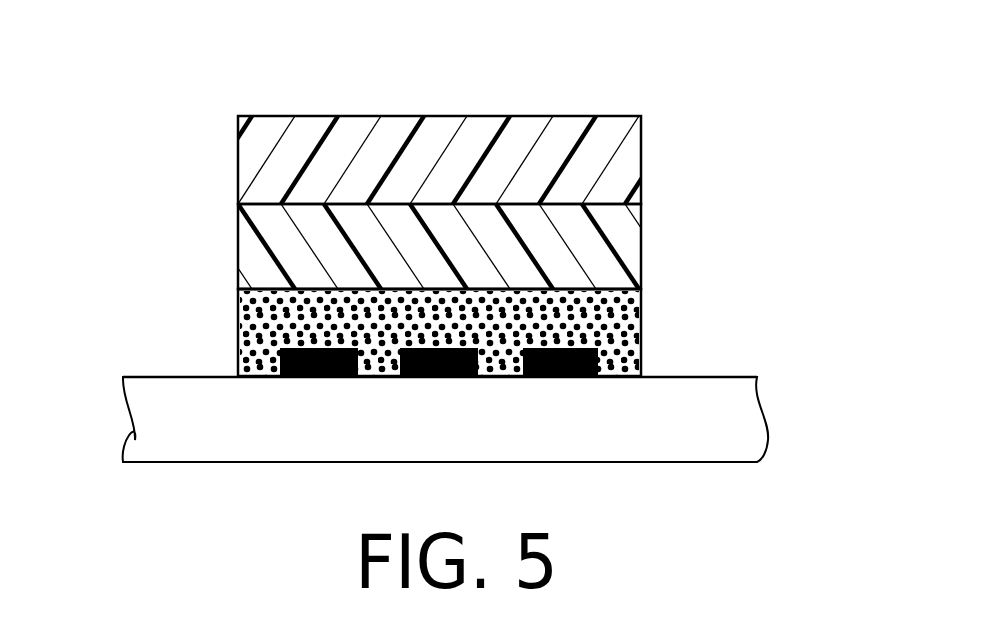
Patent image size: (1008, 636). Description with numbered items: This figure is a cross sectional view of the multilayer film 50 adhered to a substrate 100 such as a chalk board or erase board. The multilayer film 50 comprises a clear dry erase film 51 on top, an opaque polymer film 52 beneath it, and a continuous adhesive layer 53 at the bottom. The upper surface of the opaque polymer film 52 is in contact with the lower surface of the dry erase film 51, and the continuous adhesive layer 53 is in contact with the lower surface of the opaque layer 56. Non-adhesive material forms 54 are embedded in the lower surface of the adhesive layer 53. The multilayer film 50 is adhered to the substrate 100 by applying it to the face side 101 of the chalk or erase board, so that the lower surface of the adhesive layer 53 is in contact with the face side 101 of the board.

The multilayer film 50 is at (464, 196).
The clear dry erase film 51 is at (641, 146).
The opaque polymer film 52 is at (641, 243).
The continuous adhesive layer 53 is at (641, 338).
The non-adhesive material forms 54 is at (315, 347).
The opaque layer 56 is at (268, 290).
The substrate 100 is at (730, 423).
The face side 101 is at (702, 374).